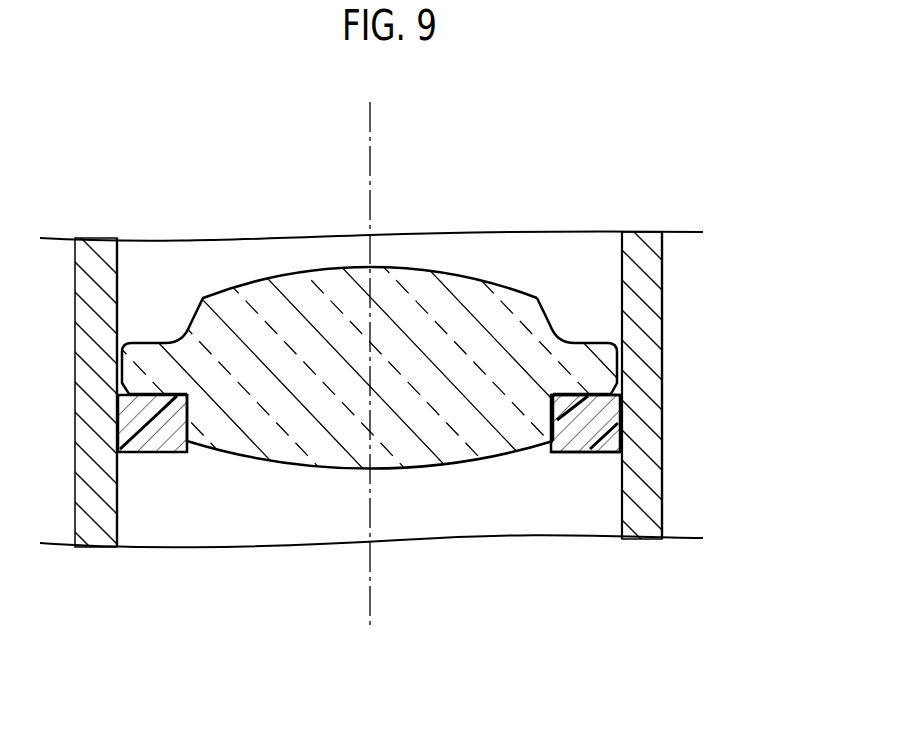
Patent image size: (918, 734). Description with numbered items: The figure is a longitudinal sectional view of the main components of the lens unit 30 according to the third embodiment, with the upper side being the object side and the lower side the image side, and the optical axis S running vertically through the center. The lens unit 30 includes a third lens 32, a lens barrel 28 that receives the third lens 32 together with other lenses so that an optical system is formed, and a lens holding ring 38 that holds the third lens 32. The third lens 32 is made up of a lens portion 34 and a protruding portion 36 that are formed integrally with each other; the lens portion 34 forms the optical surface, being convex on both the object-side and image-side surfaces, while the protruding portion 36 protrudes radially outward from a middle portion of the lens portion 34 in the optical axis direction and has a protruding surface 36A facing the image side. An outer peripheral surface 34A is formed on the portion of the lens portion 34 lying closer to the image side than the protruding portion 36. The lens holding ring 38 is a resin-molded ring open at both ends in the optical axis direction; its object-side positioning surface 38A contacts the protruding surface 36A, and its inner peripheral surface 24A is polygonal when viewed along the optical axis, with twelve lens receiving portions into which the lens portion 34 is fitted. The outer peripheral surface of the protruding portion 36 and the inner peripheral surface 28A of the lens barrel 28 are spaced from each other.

The optical axis S is at (371, 124).
The lens unit 30 is at (707, 130).
The lens barrel 28 is at (667, 263).
The inner peripheral surface 28A is at (626, 288).
The third lens 32 is at (502, 280).
The lens portion 34 is at (432, 458).
The outer peripheral surface 34A is at (620, 454).
The protruding portion 36 is at (614, 357).
The protruding surface 36A is at (620, 423).
The inner peripheral surface 24A is at (620, 364).
The lens holding ring 38 is at (585, 458).
The positioning surface 38A is at (620, 384).